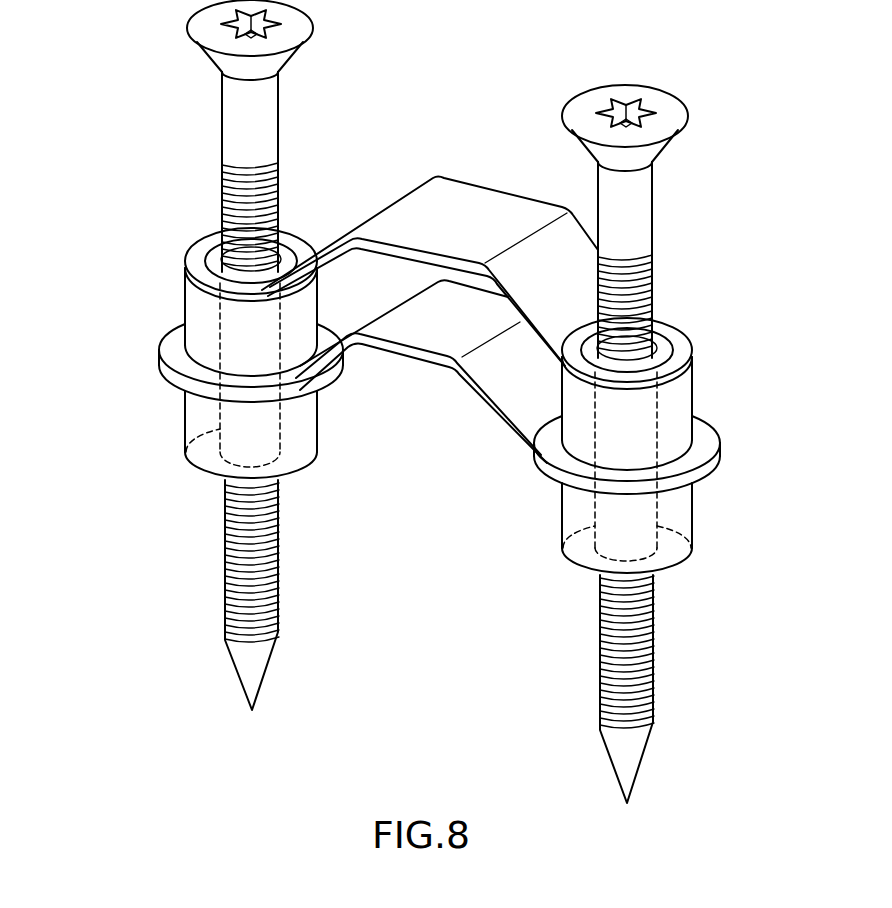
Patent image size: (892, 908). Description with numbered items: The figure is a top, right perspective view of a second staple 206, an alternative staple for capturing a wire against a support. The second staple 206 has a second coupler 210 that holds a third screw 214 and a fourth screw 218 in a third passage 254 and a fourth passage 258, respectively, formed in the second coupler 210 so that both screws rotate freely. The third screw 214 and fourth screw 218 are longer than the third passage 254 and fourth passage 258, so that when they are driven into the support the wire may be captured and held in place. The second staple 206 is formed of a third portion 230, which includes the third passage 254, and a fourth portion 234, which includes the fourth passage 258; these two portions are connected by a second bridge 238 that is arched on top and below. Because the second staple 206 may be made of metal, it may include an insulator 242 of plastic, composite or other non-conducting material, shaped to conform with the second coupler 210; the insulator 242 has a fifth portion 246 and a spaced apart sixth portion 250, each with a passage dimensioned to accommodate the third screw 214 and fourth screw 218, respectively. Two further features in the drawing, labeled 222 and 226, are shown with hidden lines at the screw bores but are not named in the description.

The second staple 206 is at (155, 158).
The second coupler 210 is at (186, 262).
The third screw 214 is at (266, 118).
The fourth screw 218 is at (635, 206).
The first bore 222 is at (218, 250).
The second bore 226 is at (662, 335).
The third portion 230 is at (207, 322).
The fourth portion 234 is at (666, 397).
The second bridge 238 is at (473, 225).
The insulator 242 is at (185, 452).
The fifth portion 246 is at (207, 420).
The sixth portion 250 is at (672, 537).
The third passage 254 is at (304, 480).
The fourth passage 258 is at (581, 578).